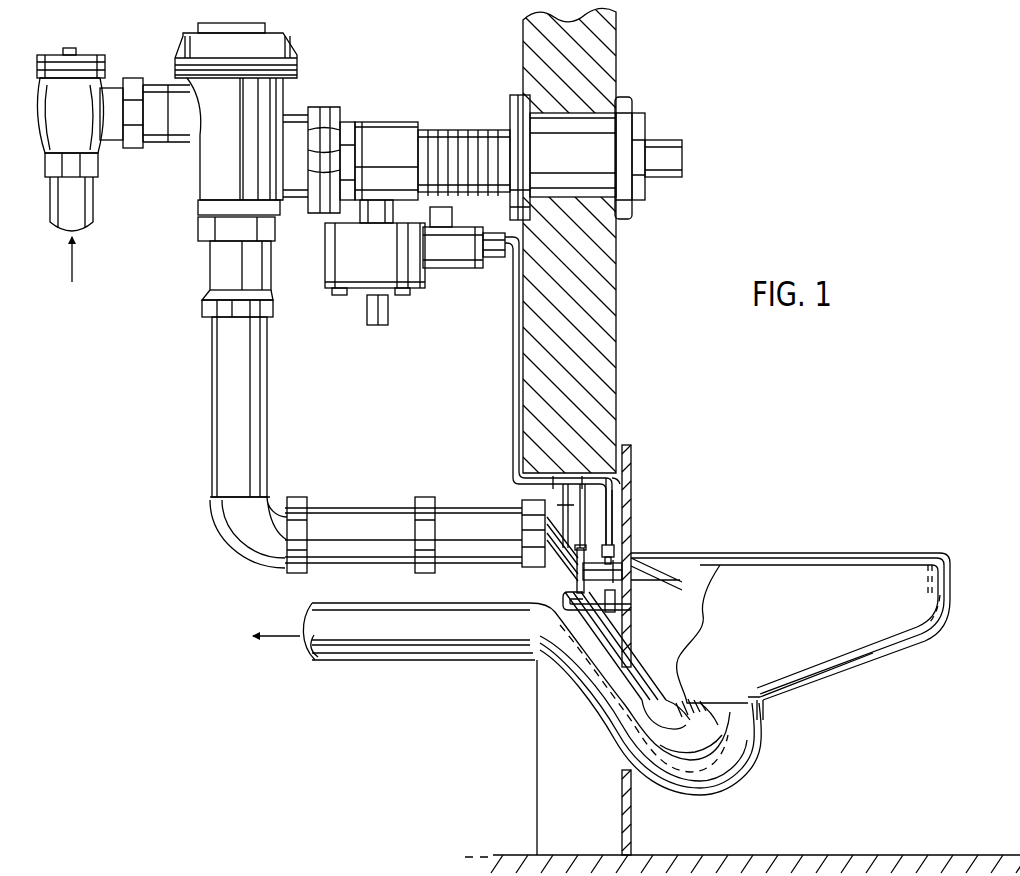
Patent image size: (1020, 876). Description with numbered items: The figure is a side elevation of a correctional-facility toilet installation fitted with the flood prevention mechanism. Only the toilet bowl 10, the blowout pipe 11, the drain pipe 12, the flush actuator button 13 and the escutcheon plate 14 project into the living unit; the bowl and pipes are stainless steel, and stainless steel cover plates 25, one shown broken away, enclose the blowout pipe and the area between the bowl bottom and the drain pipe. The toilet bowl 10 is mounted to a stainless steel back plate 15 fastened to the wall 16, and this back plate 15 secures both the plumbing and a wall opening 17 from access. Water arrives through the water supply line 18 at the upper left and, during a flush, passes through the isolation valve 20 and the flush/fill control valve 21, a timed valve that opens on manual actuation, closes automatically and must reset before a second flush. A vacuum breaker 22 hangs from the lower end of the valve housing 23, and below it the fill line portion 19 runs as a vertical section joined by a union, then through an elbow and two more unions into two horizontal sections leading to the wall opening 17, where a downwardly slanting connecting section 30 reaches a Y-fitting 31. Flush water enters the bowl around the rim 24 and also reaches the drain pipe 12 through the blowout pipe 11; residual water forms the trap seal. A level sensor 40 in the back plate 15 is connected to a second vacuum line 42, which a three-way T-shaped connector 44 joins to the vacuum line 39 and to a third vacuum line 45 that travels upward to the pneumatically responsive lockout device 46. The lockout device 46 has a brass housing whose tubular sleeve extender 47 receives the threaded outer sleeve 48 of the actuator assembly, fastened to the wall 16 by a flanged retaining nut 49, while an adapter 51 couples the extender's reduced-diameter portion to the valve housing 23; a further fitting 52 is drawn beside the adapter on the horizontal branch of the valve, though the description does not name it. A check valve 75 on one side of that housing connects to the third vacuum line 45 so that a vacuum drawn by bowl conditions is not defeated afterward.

The toilet bowl 10 is at (790, 625).
The blowout pipe 11 is at (640, 652).
The drain pipe 12 is at (716, 778).
The flush actuator button 13 is at (682, 162).
The escutcheon plate 14 is at (645, 117).
The back plate 15 is at (631, 453).
The wall 16 is at (652, 300).
The wall opening 17 is at (628, 485).
The water supply line 18 is at (100, 197).
The fill line portion 19 is at (218, 412).
The isolation valve 20 is at (85, 58).
The flush/fill control valve 21 is at (260, 121).
The vacuum breaker 22 is at (225, 270).
The valve housing 23 is at (225, 178).
The rim 24 is at (708, 565).
The cover plates 25 is at (716, 733).
The connecting section 30 is at (547, 565).
The Y-fitting 31 is at (624, 558).
The vacuum line 39 is at (613, 505).
The level sensor 40 is at (631, 601).
The second vacuum line 42 is at (530, 600).
The three-way T-shaped connector 44 is at (568, 507).
The third vacuum line 45 is at (512, 366).
The pneumatically responsive lockout device 46 is at (404, 305).
The tubular sleeve extender 47 is at (395, 120).
The threaded outer sleeve 48 is at (470, 130).
The flanged retaining nut 49 is at (512, 113).
The adapter 51 is at (353, 122).
The union nut 52 is at (321, 108).
The check valve 75 is at (462, 273).